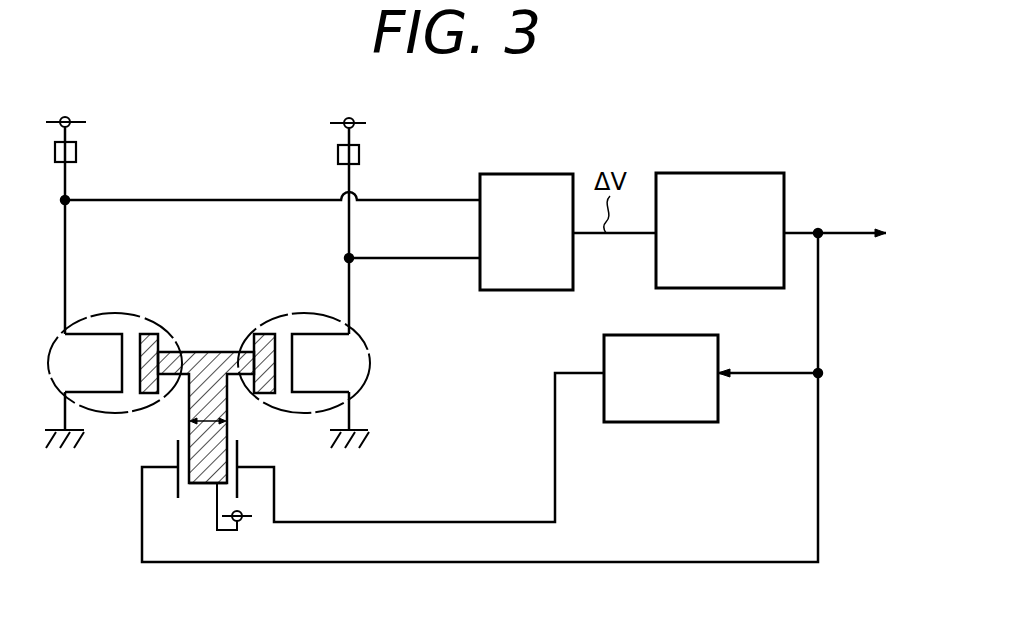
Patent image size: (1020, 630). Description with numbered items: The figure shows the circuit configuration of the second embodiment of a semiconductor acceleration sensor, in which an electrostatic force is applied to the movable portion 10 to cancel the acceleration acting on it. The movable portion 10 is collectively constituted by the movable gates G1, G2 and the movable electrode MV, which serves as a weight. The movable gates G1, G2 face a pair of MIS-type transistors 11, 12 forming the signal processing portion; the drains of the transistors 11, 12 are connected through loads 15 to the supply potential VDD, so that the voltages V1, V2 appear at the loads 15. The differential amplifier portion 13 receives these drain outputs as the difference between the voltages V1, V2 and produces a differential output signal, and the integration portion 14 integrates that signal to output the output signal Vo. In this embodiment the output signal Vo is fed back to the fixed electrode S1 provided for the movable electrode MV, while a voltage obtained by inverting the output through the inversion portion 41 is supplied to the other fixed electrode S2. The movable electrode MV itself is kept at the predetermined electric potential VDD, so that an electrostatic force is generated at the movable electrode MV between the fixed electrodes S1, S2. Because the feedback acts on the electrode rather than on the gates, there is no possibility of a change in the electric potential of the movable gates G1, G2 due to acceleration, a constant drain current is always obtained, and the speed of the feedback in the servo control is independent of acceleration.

The movable portion 10 is at (210, 352).
The MIS-type transistor 11 is at (100, 312).
The MIS-type transistor 12 is at (314, 312).
The differential amplifier portion 13 is at (508, 174).
The integration portion 14 is at (688, 173).
The load 15 is at (77, 152).
The inversion portion 41 is at (630, 424).
The movable gate G1 is at (148, 334).
The movable gate G2 is at (264, 334).
The fixed electrode S1 is at (162, 473).
The fixed electrode S2 is at (254, 473).
The movable electrode MV is at (202, 484).
The voltage V1 is at (96, 200).
The voltage V2 is at (347, 258).
The output signal Vo is at (818, 233).
The predetermined electric potential VDD is at (70, 122).